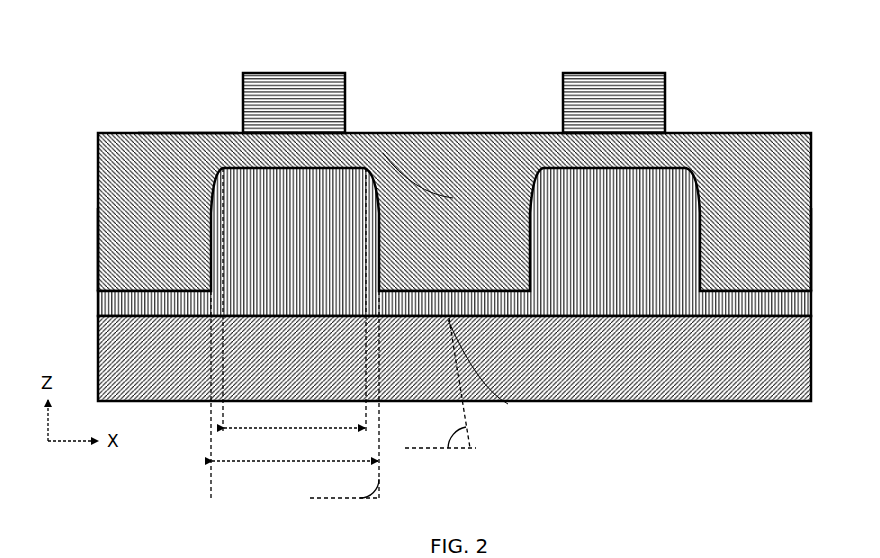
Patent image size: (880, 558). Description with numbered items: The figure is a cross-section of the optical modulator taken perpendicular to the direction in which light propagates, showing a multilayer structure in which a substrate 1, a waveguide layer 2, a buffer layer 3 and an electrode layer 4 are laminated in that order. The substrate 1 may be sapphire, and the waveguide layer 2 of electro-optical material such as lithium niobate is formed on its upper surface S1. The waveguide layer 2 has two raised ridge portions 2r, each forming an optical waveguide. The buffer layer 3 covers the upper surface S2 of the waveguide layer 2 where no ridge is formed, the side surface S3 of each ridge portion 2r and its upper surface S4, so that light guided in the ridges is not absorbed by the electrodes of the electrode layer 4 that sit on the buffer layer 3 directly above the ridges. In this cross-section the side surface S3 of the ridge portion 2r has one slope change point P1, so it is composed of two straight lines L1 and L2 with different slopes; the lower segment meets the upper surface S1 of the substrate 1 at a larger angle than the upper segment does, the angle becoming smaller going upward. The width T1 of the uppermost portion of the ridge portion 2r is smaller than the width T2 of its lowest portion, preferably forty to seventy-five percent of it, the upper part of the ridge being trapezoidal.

The substrate 1 is at (805, 365).
The waveguide layer 2 is at (805, 295).
The buffer layer 3 is at (805, 152).
The electrode layer 4 is at (685, 58).
The ridge portion 2r is at (374, 165).
The slope change point P1 is at (428, 150).
The straight line L1 is at (445, 175).
The straight line L2 is at (390, 165).
The upper surface of substrate S1 is at (805, 238).
The upper surface of waveguide layer S2 is at (135, 275).
The side surface of ridge portion S3 is at (497, 394).
The upper surface of ridge portion S4 is at (210, 125).
The width of uppermost portion of ridge portion T1 is at (294, 300).
The width of lowest portion of ridge portion T2 is at (295, 394).